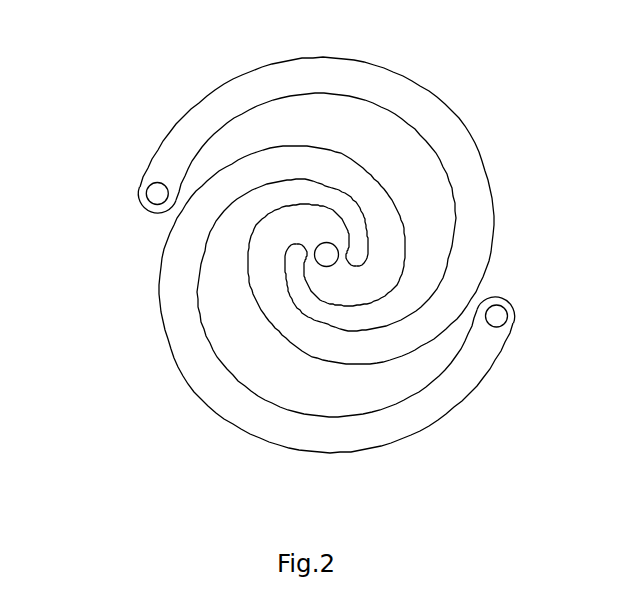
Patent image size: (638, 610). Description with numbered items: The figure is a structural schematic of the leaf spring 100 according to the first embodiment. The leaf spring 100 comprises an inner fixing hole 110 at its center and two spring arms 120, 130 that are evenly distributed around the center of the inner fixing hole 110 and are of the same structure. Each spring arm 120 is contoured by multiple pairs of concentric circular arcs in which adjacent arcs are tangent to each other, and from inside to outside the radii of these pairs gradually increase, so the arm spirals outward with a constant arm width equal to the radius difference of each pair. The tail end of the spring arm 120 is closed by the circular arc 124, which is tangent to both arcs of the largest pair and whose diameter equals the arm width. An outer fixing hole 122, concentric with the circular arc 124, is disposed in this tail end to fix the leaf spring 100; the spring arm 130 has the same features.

The leaf spring 100 is at (183, 91).
The inner fixing hole 110 is at (327, 254).
The spring arm 120 is at (190, 340).
The outer fixing hole 122 is at (503, 327).
The circular arc 124 is at (583, 274).
The spring arm 130 is at (538, 72).